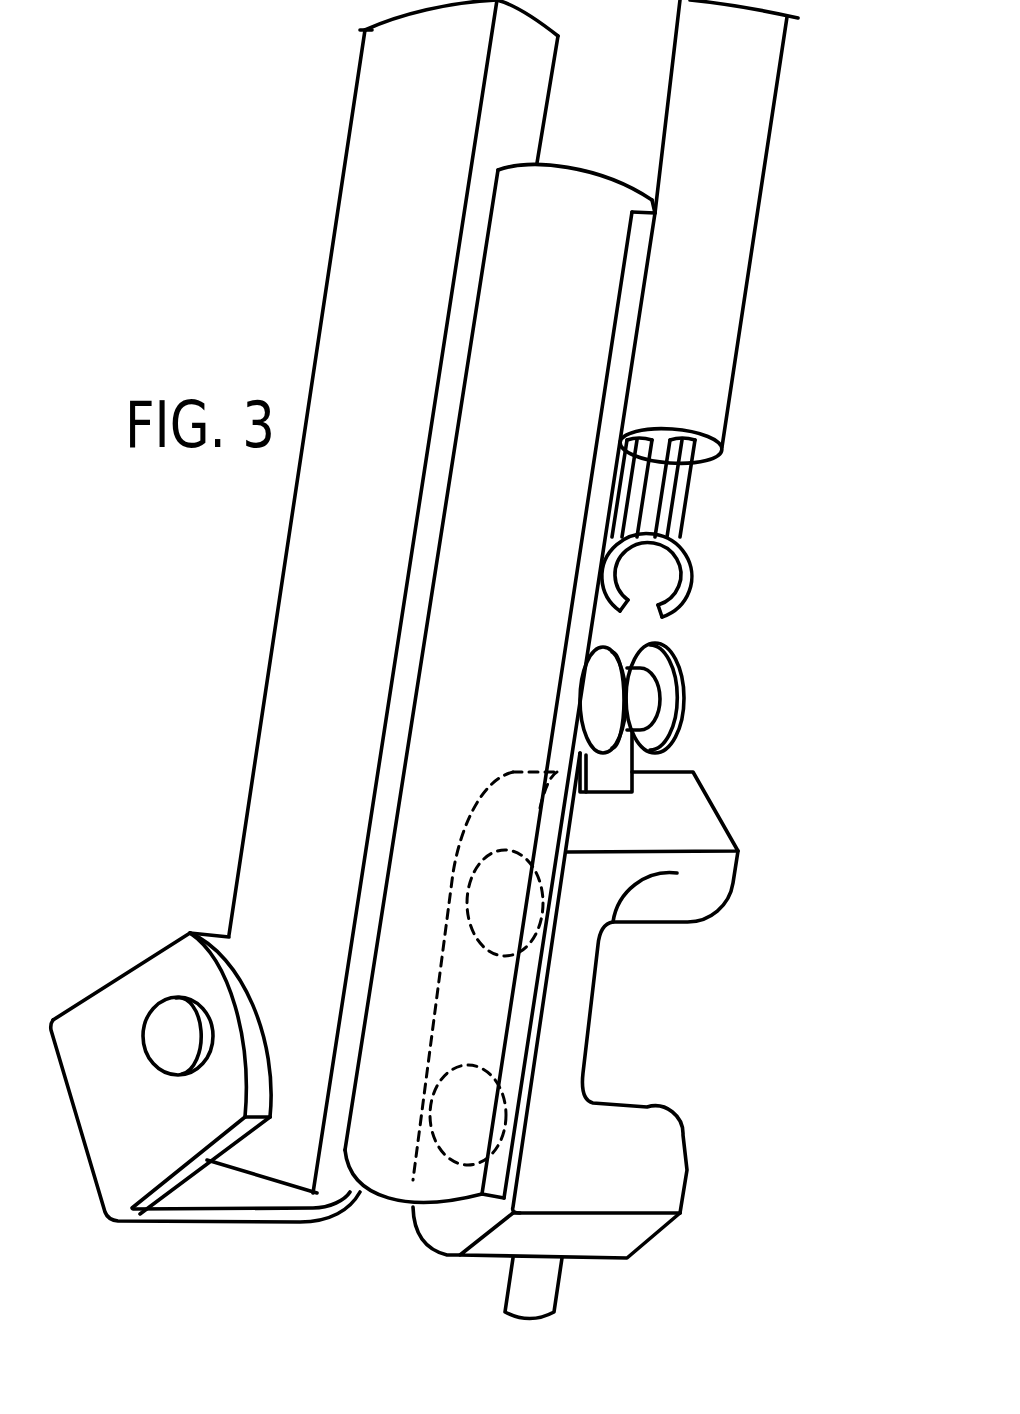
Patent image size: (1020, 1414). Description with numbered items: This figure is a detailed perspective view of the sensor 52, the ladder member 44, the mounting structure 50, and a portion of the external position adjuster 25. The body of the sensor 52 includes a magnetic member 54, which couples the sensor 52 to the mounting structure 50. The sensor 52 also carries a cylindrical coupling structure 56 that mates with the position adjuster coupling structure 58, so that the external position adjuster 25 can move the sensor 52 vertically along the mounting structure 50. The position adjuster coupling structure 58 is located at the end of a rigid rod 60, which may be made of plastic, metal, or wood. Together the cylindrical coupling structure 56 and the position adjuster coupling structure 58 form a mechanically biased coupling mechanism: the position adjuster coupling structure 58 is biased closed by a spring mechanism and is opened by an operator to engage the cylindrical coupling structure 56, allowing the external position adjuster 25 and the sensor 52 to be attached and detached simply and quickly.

The external position adjuster 25 is at (763, 288).
The ladder member 44 is at (388, 120).
The mounting structure 50 is at (553, 197).
The sensor 52 is at (777, 1015).
The magnetic member 54 is at (470, 1112).
The cylindrical coupling structure 56 is at (603, 700).
The position adjuster coupling structure 58 is at (680, 583).
The rigid rod 60 is at (745, 133).